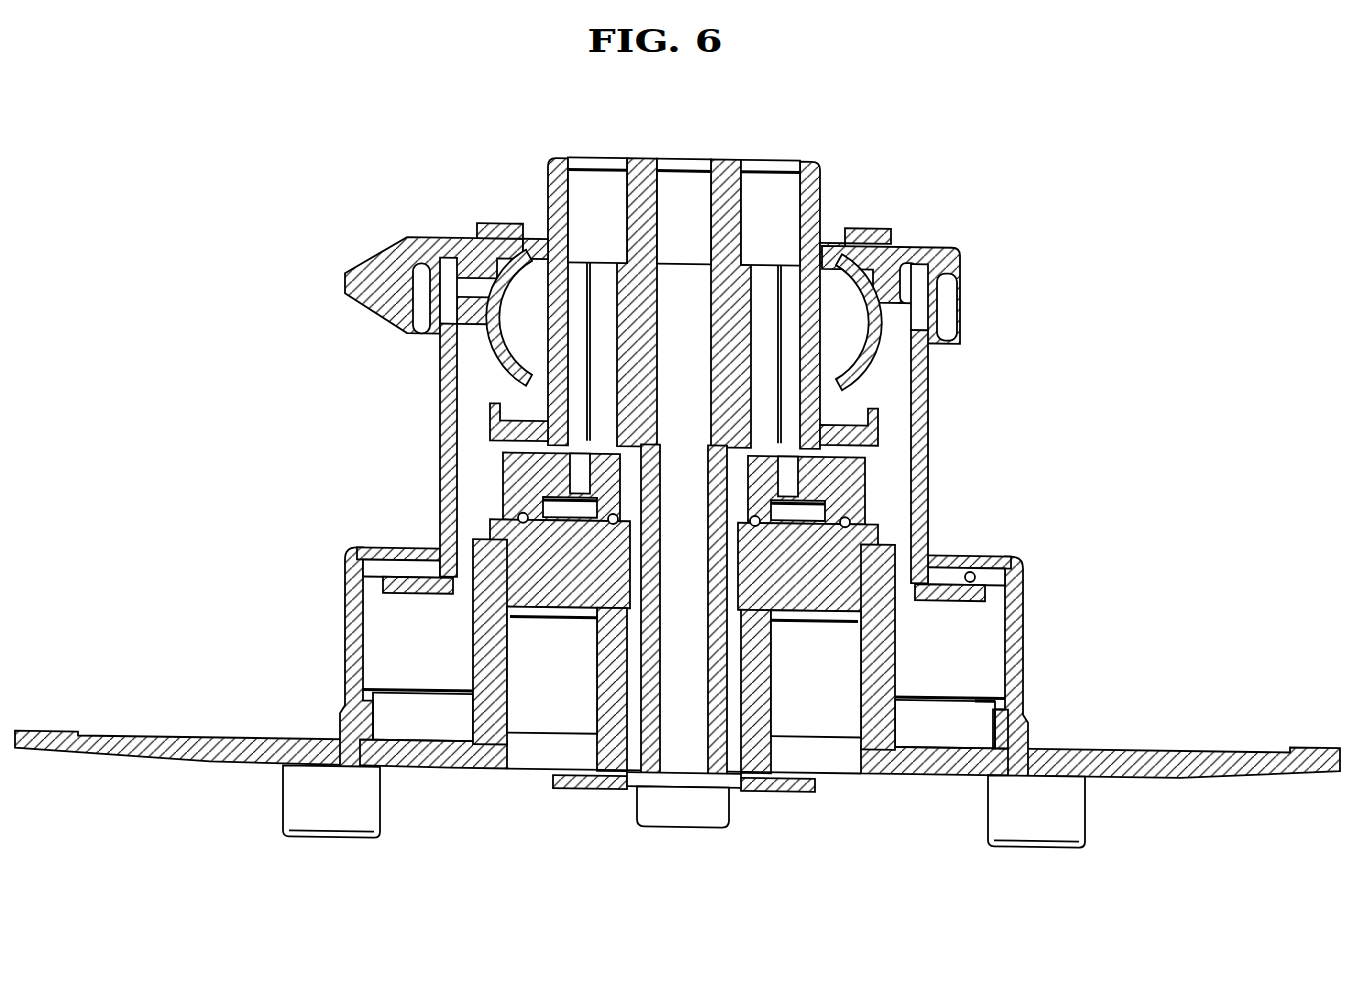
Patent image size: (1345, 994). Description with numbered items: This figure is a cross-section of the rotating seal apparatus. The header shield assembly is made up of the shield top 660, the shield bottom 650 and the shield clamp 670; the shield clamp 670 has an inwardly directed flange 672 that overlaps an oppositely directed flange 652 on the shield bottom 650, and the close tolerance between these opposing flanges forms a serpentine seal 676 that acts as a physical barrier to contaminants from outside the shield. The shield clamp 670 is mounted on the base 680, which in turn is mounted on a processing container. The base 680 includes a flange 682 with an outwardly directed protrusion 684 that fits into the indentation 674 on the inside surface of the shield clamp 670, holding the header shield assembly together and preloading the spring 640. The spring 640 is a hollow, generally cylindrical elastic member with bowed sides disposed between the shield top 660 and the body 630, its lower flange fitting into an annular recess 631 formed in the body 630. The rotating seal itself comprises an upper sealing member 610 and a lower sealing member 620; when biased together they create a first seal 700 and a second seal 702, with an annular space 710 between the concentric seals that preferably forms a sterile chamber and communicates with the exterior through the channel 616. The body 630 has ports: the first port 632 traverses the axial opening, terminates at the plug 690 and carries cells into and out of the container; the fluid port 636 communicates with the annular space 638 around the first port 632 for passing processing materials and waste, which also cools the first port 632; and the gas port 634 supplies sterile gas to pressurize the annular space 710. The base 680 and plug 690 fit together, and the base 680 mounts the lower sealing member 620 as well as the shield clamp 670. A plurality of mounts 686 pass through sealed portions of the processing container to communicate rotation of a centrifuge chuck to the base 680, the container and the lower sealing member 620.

The upper sealing member 610 is at (778, 261).
The channel 616 is at (580, 471).
The lower sealing member 620 is at (750, 553).
The body 630 is at (880, 412).
The annular recess 631 is at (875, 442).
The first port 632 is at (684, 171).
The gas port 634 is at (600, 159).
The fluid port 636 is at (780, 160).
The annular space 638 is at (733, 755).
The spring 640 is at (880, 339).
The shield bottom 650 is at (440, 390).
The flange 652 is at (960, 599).
The shield top 660 is at (962, 280).
The shield clamp 670 is at (1030, 650).
The inwardly directed flange 672 is at (1000, 546).
The indentation 674 is at (1022, 730).
The serpentine seal 676 is at (987, 574).
The base 680 is at (1190, 771).
The flange 682 is at (983, 716).
The protrusion 684 is at (987, 716).
The mounts 686 is at (353, 815).
The plug 690 is at (578, 791).
The first seal 700 is at (487, 543).
The second seal 702 is at (555, 515).
The annular space 710 is at (578, 499).